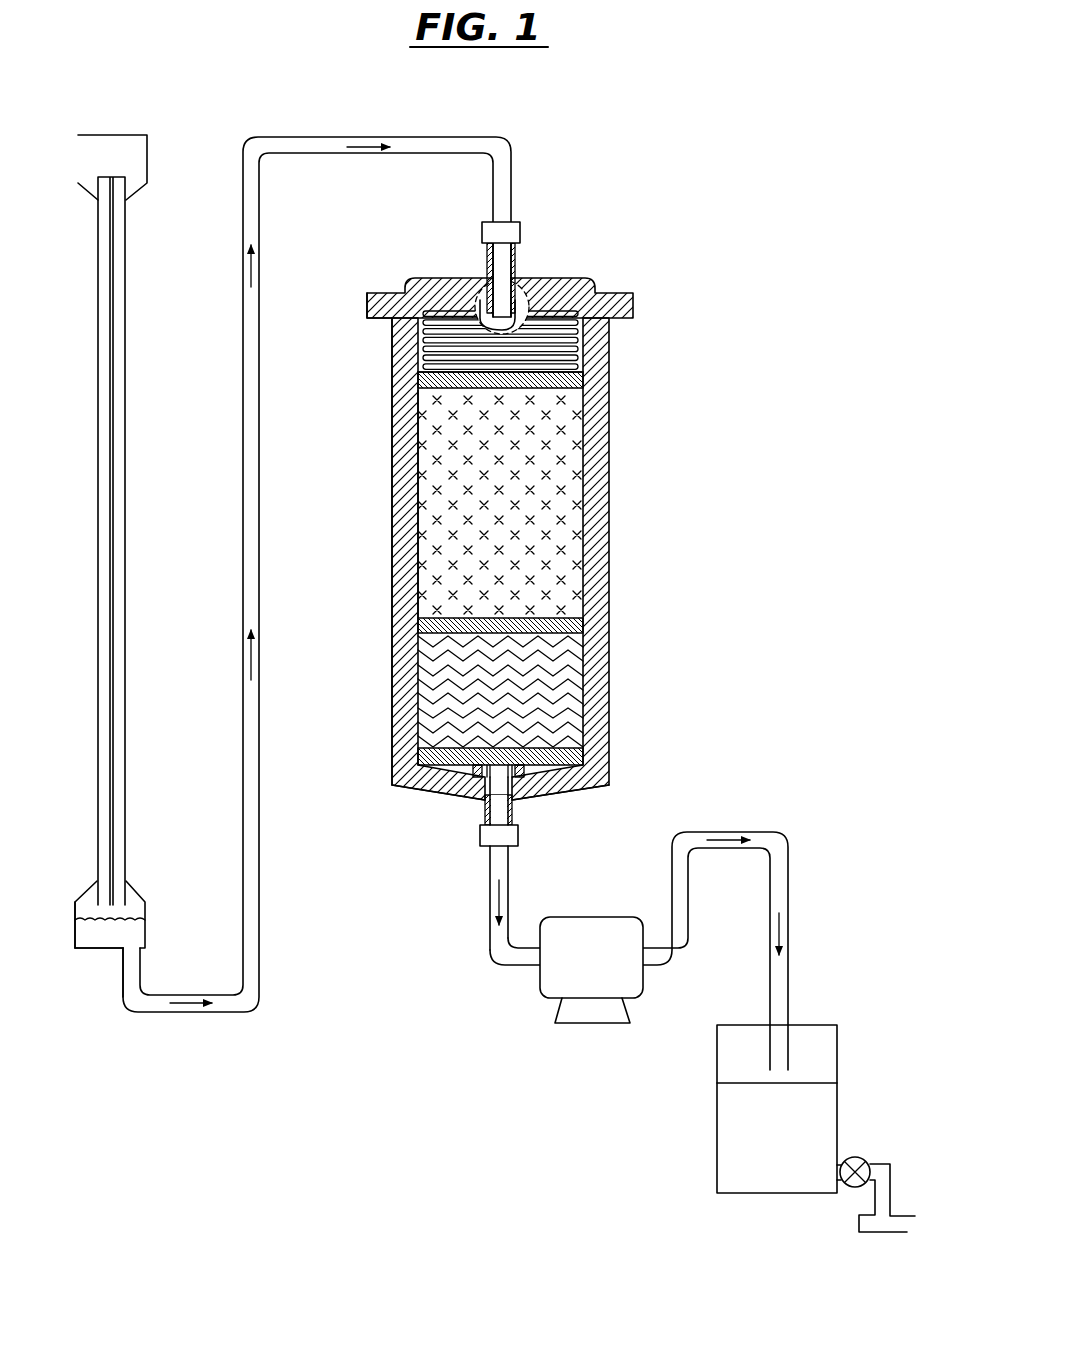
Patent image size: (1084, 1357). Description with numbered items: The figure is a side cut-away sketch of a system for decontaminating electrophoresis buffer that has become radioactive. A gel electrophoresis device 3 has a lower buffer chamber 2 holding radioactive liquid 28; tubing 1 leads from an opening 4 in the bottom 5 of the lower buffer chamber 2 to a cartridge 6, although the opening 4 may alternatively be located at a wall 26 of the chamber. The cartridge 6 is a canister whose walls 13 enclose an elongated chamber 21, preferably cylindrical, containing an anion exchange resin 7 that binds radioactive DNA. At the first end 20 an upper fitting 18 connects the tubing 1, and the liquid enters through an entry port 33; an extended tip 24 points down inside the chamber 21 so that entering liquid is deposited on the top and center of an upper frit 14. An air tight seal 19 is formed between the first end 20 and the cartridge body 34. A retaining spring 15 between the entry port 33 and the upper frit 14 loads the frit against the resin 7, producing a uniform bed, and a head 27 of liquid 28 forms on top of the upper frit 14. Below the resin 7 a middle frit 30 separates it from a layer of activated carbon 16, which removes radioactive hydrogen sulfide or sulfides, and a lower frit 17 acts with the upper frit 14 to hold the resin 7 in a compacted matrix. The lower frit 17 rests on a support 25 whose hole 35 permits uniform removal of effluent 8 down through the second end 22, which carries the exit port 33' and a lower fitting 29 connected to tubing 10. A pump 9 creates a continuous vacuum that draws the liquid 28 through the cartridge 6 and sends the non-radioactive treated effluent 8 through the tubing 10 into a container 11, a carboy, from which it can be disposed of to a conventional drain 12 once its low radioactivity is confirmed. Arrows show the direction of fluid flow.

The tubing 1 is at (243, 745).
The lower buffer chamber 2 is at (75, 930).
The gel electrophoresis device 3 is at (97, 575).
The opening 4 is at (130, 940).
The bottom 5 is at (97, 950).
The cartridge 6 is at (392, 525).
The anion exchange resin 7 is at (550, 592).
The effluent 8 is at (490, 895).
The pump 9 is at (593, 917).
The tubing 10 is at (727, 832).
The container 11 is at (837, 1060).
The conventional drain 12 is at (905, 1212).
The walls 13 is at (400, 460).
The upper frit 14 is at (578, 388).
The retaining spring 15 is at (556, 330).
The activated carbon layer 16 is at (567, 684).
The lower frit 17 is at (572, 760).
The upper fitting 18 is at (520, 232).
The air tight seal 19 is at (368, 305).
The first end 20 is at (425, 278).
The elongated chamber 21 is at (418, 425).
The second end 22 is at (452, 798).
The extended tip 24 is at (512, 308).
The support 25 is at (452, 770).
The wall 26 is at (145, 920).
The head 27 is at (565, 372).
The radioactive liquid 28 is at (101, 935).
The lower fitting 29 is at (518, 830).
The middle frit 30 is at (583, 630).
The entry port 33 is at (483, 283).
The exit port 33' is at (471, 831).
The cartridge body 34 is at (392, 358).
The hole 35 is at (512, 793).